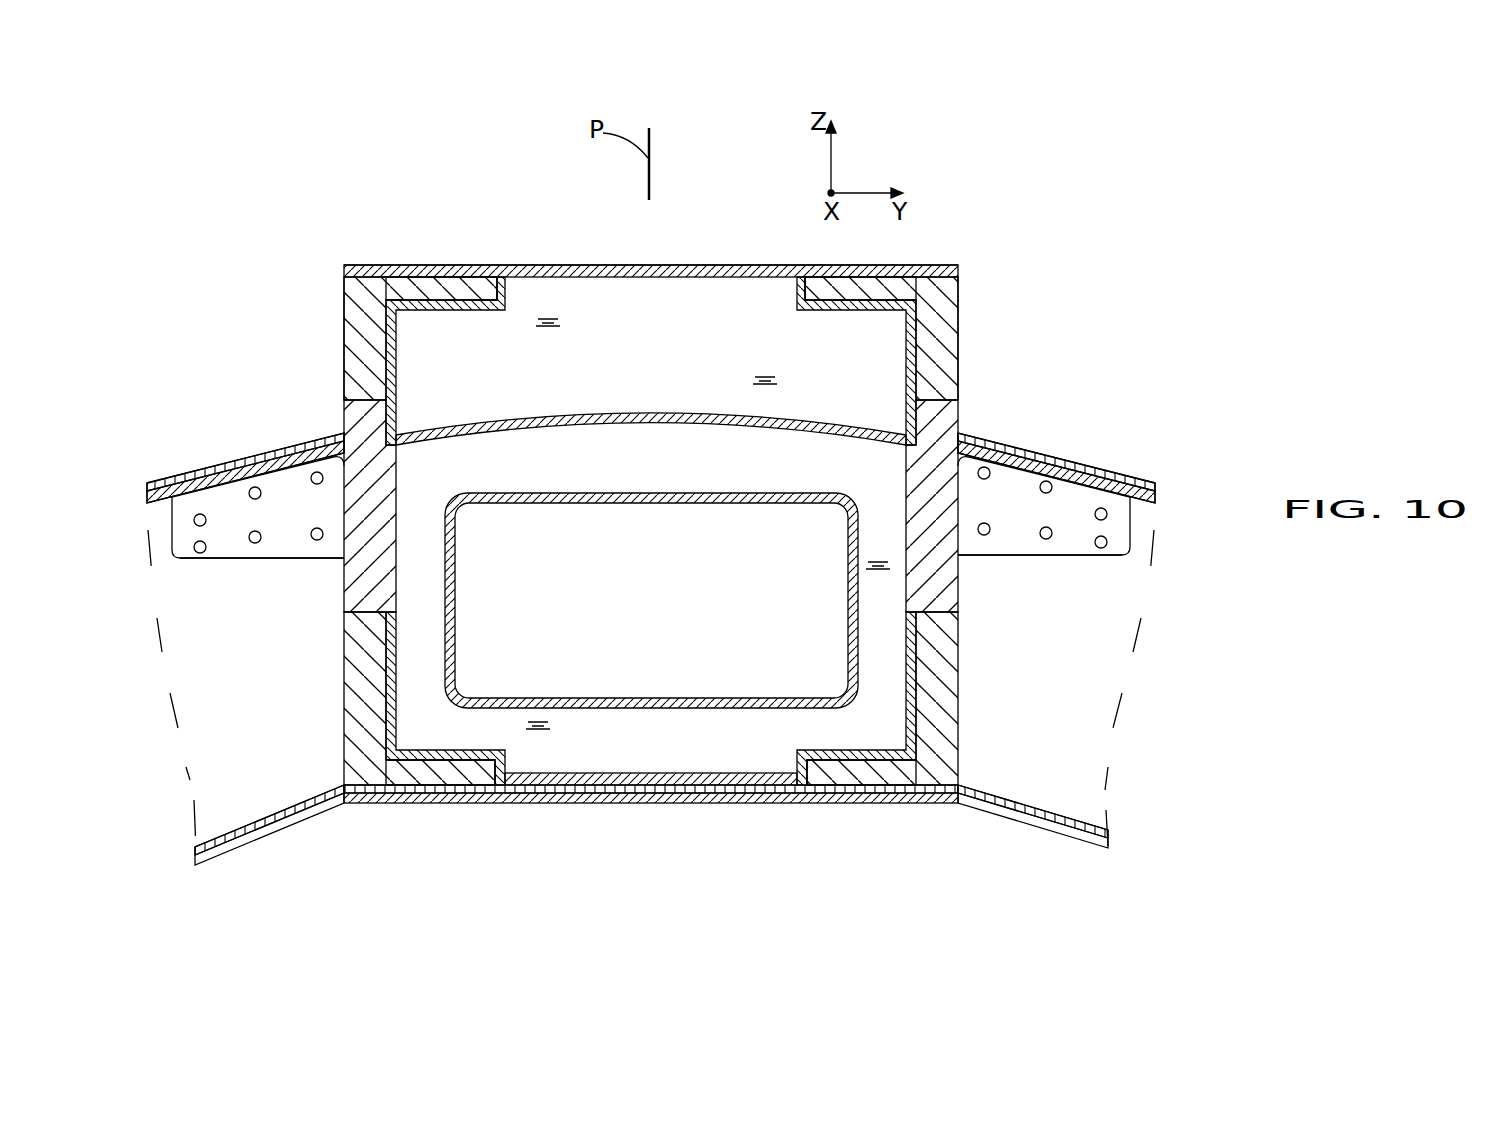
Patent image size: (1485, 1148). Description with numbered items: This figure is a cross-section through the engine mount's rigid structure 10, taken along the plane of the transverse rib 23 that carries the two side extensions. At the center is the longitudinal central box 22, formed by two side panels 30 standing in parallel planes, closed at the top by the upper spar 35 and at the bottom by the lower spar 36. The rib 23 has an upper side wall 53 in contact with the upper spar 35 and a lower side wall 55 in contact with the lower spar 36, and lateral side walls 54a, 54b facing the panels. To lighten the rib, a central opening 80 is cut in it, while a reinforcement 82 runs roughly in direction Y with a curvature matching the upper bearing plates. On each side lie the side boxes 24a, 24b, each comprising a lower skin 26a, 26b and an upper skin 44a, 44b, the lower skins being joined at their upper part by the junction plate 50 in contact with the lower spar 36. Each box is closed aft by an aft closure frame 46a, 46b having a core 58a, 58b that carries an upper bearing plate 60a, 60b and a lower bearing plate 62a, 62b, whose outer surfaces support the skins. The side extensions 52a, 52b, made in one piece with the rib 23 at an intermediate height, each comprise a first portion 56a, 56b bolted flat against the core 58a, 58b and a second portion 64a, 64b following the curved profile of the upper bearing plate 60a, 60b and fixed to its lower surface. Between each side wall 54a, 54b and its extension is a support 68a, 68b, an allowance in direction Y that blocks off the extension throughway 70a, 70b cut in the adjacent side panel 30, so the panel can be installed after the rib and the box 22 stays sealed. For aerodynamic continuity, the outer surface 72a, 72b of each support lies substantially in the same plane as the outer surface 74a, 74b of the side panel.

The rigid structure 10 is at (509, 236).
The longitudinal central box 22 is at (641, 258).
The transverse rib 23 is at (691, 311).
The side box 24a is at (1126, 707).
The side box 24b is at (185, 760).
The lower skin 26a is at (1048, 826).
The lower skin 26b is at (270, 832).
The side panel 30 is at (352, 311).
The upper spar 35 is at (400, 264).
The lower spar 36 is at (413, 790).
The upper skin 44a is at (1058, 448).
The upper skin 44b is at (243, 480).
The aft closure frame 46a is at (1119, 658).
The aft closure frame 46b is at (222, 680).
The junction plate 50 is at (690, 800).
The side extension 52a is at (1126, 530).
The side extension 52b is at (237, 470).
The upper side wall 53 is at (547, 275).
The side wall 54a is at (908, 360).
The side wall 54b is at (398, 352).
The lower side wall 55 is at (590, 794).
The first portion 56a is at (1095, 560).
The first portion 56b is at (297, 545).
The core 58a is at (1092, 752).
The core 58b is at (318, 768).
The upper bearing plate 60a is at (1005, 432).
The upper bearing plate 60b is at (190, 468).
The lower bearing plate 62a is at (975, 795).
The lower bearing plate 62b is at (228, 844).
The second portion 64a is at (1100, 465).
The second portion 64b is at (310, 445).
The support for side extension 68a is at (935, 625).
The support for side extension 68b is at (392, 488).
The extension throughway 70a is at (960, 405).
The extension throughway 70b is at (385, 605).
The outer surface 72a is at (960, 584).
The outer surface 72b is at (343, 614).
The outer surface 74a is at (960, 295).
The outer surface 74b is at (344, 353).
The central opening 80 is at (457, 630).
The reinforcement 82 is at (638, 416).